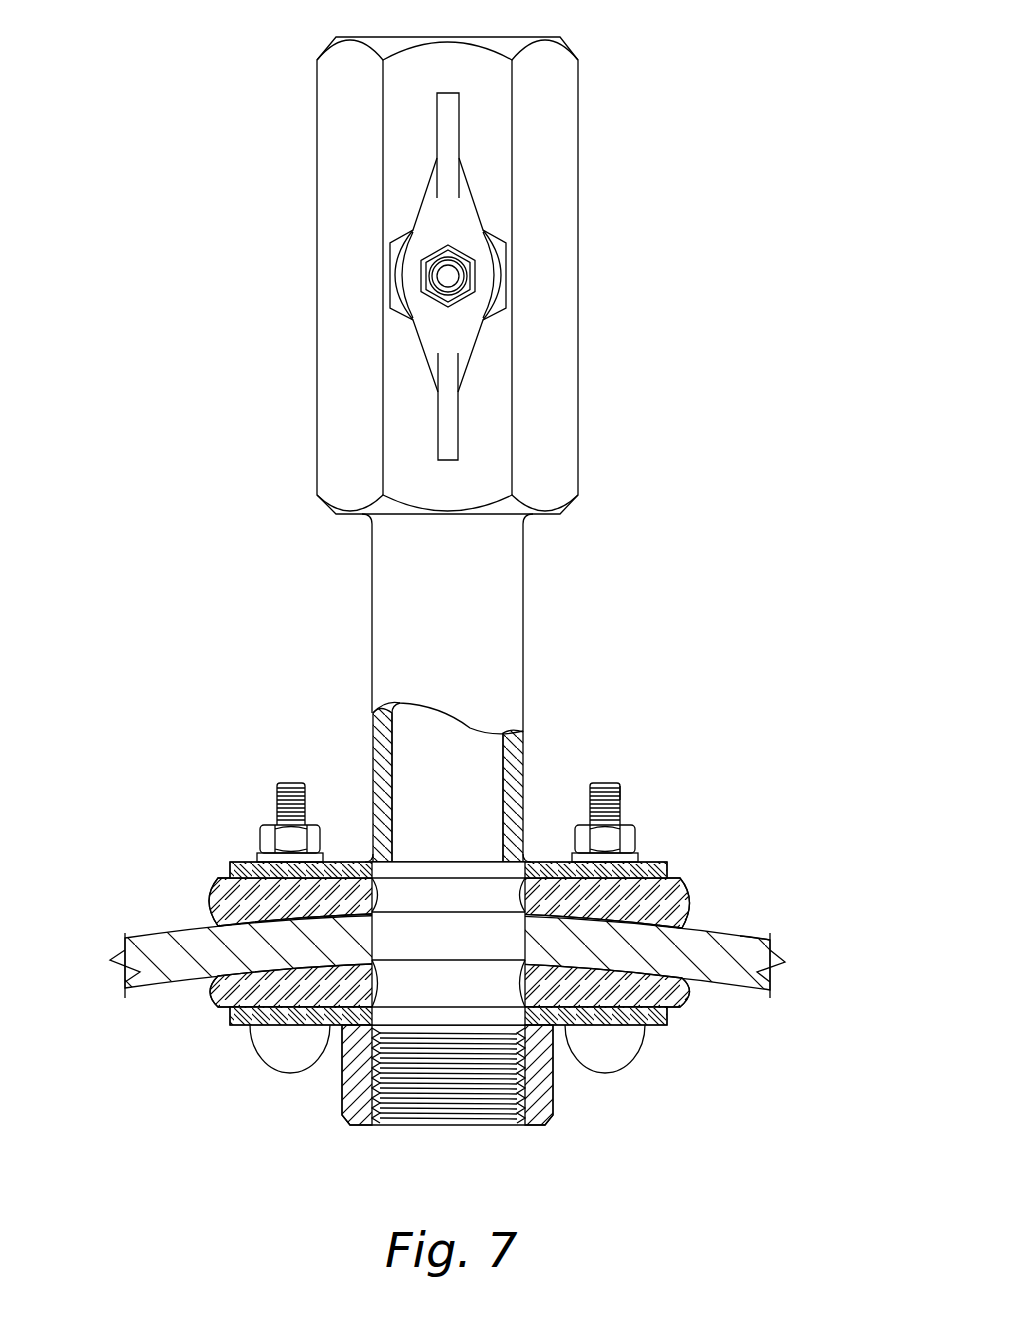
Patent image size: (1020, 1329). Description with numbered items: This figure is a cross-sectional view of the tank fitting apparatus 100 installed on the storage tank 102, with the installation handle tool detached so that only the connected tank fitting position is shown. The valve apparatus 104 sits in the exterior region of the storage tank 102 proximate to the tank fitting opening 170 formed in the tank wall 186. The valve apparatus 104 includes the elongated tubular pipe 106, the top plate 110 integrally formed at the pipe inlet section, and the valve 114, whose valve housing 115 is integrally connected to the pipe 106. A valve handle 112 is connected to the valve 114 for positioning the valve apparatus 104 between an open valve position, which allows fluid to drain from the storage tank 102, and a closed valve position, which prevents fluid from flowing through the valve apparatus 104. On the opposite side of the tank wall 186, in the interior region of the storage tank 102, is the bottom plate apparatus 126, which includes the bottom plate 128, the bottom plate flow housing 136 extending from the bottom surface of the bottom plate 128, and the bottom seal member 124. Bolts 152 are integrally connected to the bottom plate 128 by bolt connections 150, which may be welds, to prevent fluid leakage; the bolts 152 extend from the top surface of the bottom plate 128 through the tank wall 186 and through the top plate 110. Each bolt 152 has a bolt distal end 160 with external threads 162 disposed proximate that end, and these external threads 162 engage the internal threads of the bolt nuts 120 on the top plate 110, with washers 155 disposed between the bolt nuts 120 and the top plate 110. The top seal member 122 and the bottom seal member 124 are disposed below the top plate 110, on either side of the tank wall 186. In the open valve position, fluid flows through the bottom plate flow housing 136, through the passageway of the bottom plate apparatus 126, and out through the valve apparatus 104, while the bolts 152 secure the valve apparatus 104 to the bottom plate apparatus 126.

The tank fitting apparatus 100 is at (138, 43).
The storage tank 102 is at (160, 933).
The valve apparatus 104 is at (628, 402).
The pipe 106 is at (524, 607).
The top plate 110 is at (232, 872).
The valve handle 112 is at (450, 117).
The valve 114 is at (580, 233).
The valve housing 115 is at (562, 158).
The bolt nuts 120 is at (258, 840).
The top seal member 122 is at (686, 897).
The bottom seal member 124 is at (688, 1005).
The bottom plate apparatus 126 is at (692, 1052).
The bottom plate 128 is at (233, 1027).
The bottom plate flow housing 136 is at (342, 1105).
The bolt connections 150 is at (605, 1075).
The bolts 152 is at (625, 790).
The washers 155 is at (636, 852).
The bolt distal end 160 is at (605, 782).
The external threads 162 is at (275, 797).
The tank fitting opening 170 is at (448, 982).
The tank wall 186 is at (750, 940).